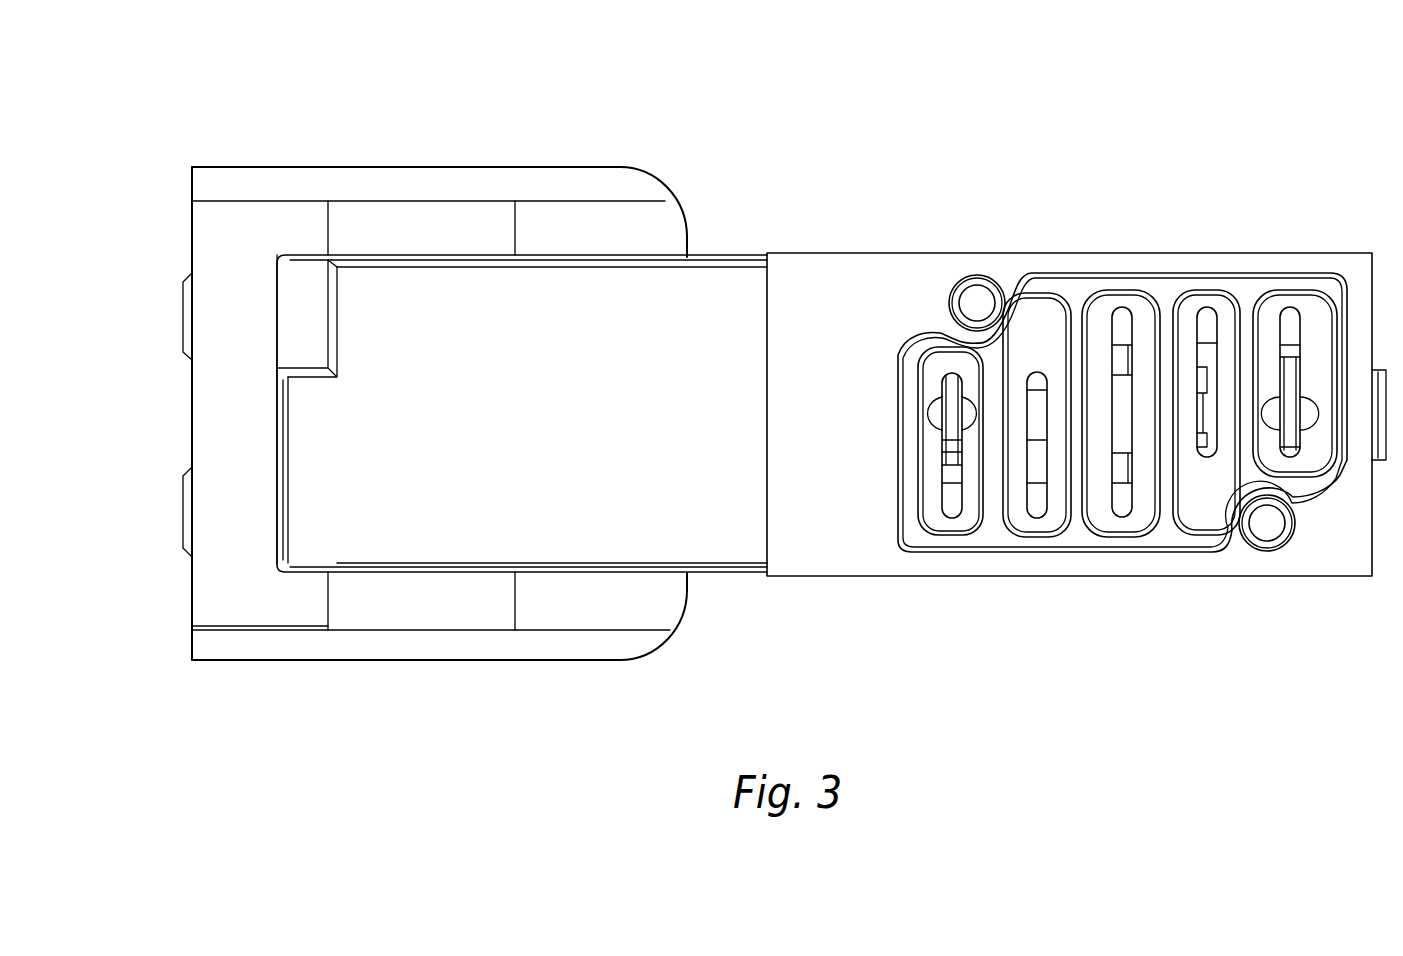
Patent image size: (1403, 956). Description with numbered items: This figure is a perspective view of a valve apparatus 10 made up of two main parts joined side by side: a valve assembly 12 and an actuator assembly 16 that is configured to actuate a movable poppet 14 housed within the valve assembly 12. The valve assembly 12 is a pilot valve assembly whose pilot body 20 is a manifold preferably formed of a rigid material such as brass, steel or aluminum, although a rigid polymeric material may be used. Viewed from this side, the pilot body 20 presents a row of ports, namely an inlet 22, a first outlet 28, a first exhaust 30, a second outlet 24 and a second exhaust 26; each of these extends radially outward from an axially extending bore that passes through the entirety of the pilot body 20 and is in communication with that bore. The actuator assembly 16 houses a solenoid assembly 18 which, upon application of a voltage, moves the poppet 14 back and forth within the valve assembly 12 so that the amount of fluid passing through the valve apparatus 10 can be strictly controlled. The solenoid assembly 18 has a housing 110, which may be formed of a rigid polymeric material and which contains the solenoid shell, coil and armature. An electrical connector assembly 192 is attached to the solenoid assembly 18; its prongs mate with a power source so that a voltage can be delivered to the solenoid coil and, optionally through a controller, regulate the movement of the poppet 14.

The valve apparatus 10 is at (1254, 162).
The valve assembly 12 is at (1093, 582).
The movable poppet 14 is at (1033, 455).
The actuator assembly 16 is at (234, 163).
The solenoid assembly 18 is at (562, 408).
The pilot body 20 is at (858, 314).
The inlet 22 is at (1122, 518).
The second outlet 24 is at (1035, 518).
The second exhaust 26 is at (952, 518).
The first outlet 28 is at (1217, 400).
The first exhaust 30 is at (1303, 318).
The housing 110 is at (393, 513).
The electrical connector assembly 192 is at (525, 167).